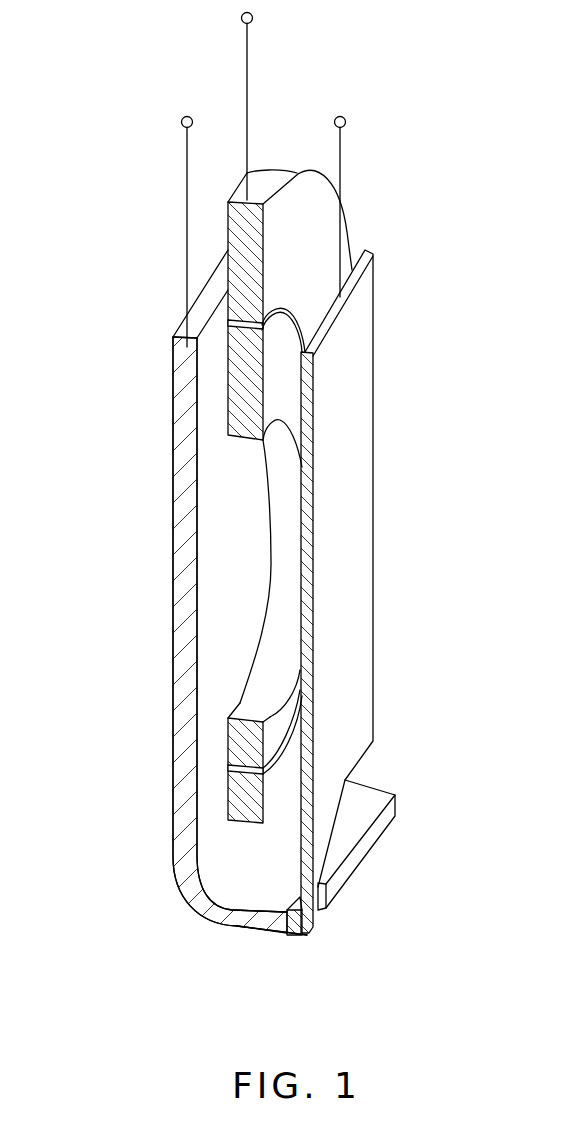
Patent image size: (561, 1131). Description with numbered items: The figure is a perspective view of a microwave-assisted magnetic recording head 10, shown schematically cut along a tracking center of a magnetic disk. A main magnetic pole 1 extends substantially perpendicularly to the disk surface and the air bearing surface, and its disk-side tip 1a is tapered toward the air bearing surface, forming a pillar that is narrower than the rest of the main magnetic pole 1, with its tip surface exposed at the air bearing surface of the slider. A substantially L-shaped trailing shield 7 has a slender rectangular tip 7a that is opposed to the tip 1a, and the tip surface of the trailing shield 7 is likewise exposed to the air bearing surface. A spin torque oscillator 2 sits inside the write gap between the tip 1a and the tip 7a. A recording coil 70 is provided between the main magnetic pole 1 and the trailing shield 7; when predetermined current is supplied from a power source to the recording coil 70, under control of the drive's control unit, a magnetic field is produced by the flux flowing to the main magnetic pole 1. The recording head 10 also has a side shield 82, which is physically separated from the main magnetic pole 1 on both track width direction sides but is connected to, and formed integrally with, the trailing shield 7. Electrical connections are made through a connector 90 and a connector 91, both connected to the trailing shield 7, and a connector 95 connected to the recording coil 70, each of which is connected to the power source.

The recording head 10 is at (140, 479).
The trailing shield 7 is at (166, 735).
The tip of trailing shield 7a is at (213, 924).
The recording coil 70 is at (228, 222).
The main magnetic pole 1 is at (341, 633).
The tip of main magnetic pole 1a is at (321, 923).
The spin torque oscillator 2 is at (298, 937).
The side shield 82 is at (359, 821).
The connector 90 is at (340, 116).
The connector 91 is at (181, 123).
The connector 95 is at (241, 19).